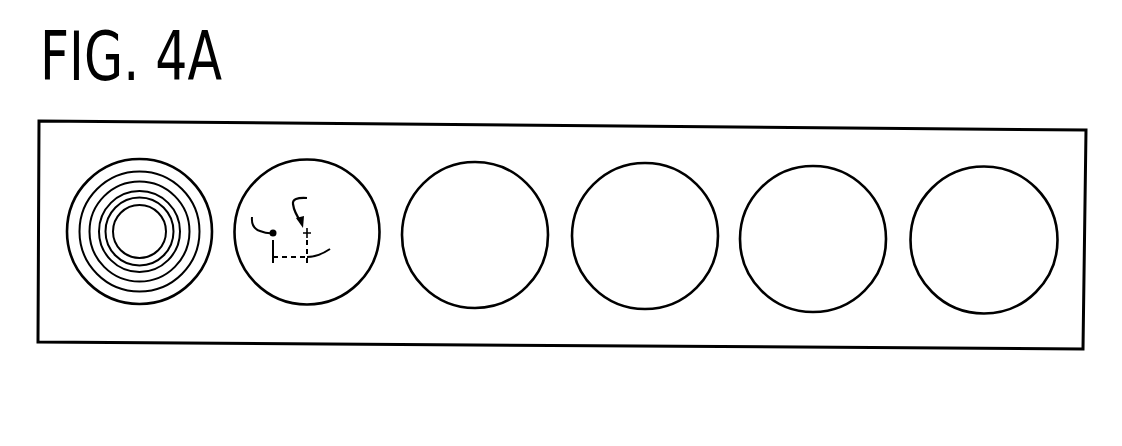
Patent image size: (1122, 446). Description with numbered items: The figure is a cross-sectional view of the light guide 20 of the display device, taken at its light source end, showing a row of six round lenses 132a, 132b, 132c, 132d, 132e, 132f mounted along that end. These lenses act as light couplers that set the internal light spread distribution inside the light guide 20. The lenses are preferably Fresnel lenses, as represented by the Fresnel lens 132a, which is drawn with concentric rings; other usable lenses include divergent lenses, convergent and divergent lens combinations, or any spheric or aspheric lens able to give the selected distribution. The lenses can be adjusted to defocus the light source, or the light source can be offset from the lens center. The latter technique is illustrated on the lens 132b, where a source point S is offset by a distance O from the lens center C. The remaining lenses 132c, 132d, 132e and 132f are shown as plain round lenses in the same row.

The light guide 20 is at (568, 127).
The Fresnel lens 132a is at (163, 293).
The lens 132b is at (325, 293).
The round lens 132c is at (487, 308).
The round lens 132d is at (638, 309).
The round lens 132e is at (857, 297).
The round lens 132f is at (972, 313).